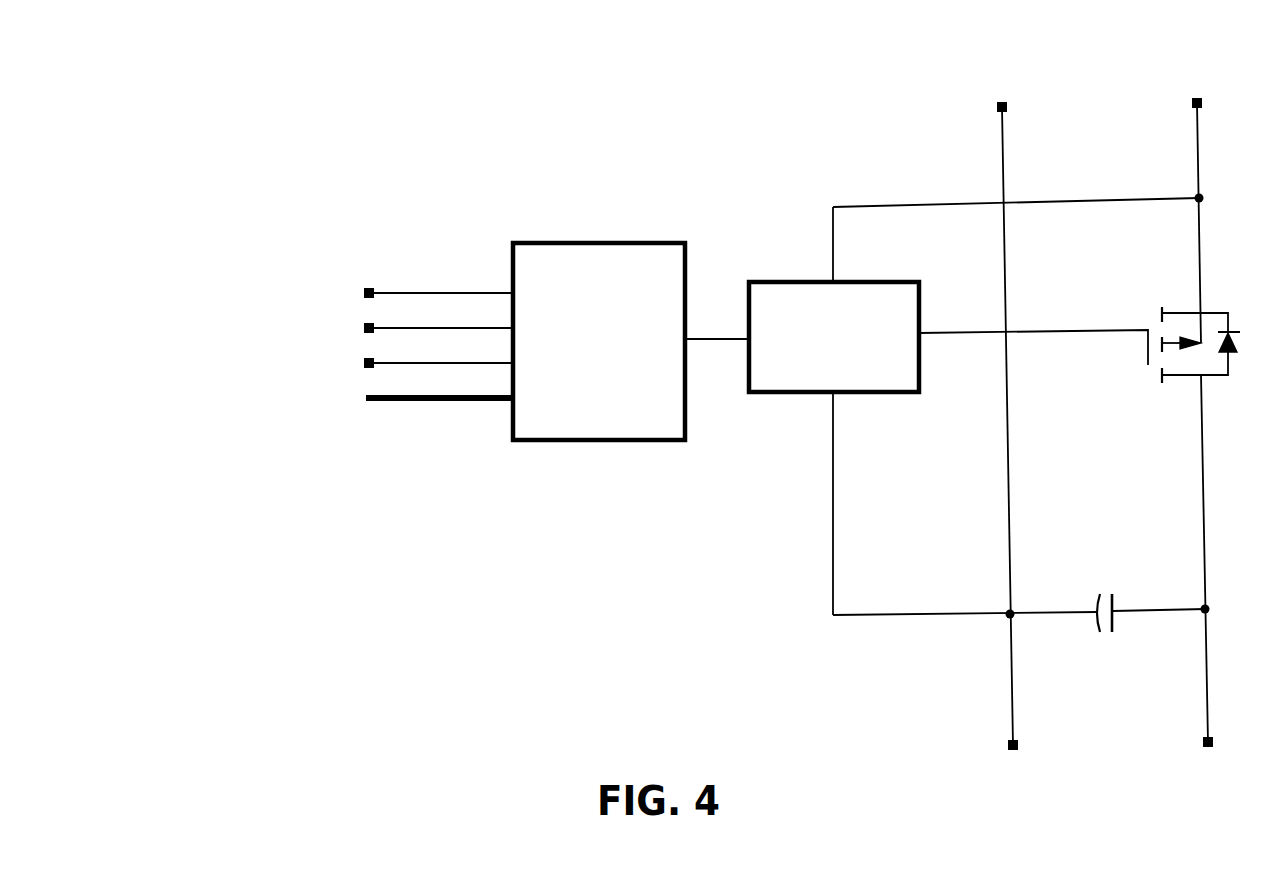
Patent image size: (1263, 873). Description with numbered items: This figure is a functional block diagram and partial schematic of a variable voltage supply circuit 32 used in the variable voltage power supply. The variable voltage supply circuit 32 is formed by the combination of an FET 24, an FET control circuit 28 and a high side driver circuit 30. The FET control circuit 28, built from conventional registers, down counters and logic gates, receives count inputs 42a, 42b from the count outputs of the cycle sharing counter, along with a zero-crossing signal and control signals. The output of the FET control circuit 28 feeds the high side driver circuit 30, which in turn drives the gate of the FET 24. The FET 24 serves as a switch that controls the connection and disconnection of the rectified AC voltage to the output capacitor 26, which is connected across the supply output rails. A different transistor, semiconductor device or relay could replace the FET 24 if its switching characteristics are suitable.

The variable voltage supply circuit 32 is at (180, 75).
The input 42a is at (427, 290).
The input 42b is at (490, 325).
The FET control circuit 28 is at (600, 442).
The high side driver circuit 30 is at (785, 395).
The FET 24 is at (1148, 383).
The output capacitor 26 is at (1092, 573).